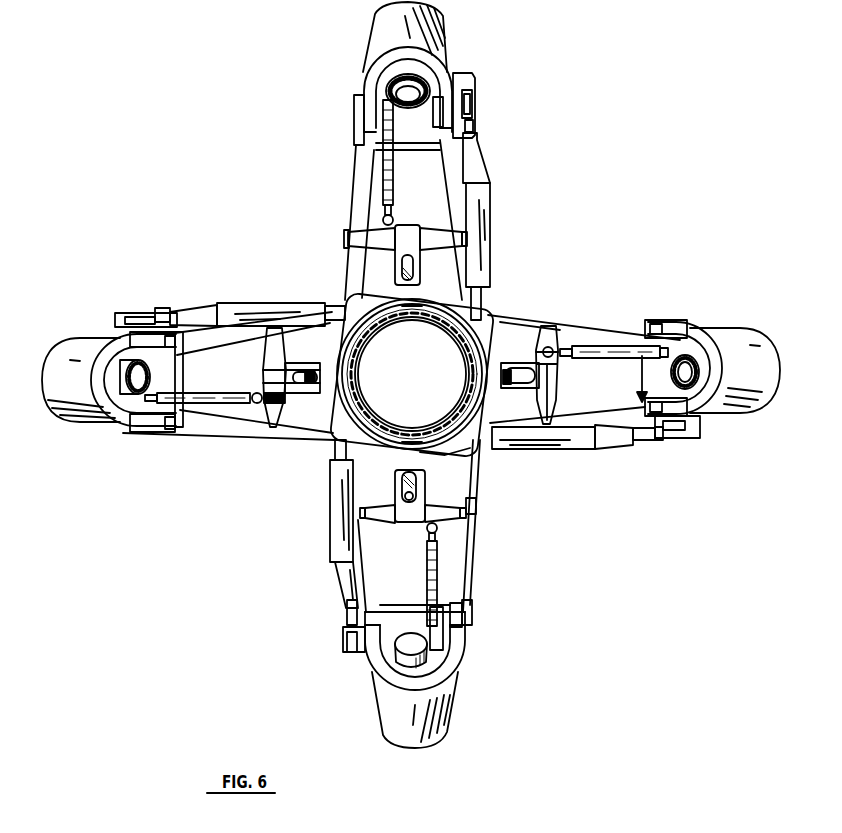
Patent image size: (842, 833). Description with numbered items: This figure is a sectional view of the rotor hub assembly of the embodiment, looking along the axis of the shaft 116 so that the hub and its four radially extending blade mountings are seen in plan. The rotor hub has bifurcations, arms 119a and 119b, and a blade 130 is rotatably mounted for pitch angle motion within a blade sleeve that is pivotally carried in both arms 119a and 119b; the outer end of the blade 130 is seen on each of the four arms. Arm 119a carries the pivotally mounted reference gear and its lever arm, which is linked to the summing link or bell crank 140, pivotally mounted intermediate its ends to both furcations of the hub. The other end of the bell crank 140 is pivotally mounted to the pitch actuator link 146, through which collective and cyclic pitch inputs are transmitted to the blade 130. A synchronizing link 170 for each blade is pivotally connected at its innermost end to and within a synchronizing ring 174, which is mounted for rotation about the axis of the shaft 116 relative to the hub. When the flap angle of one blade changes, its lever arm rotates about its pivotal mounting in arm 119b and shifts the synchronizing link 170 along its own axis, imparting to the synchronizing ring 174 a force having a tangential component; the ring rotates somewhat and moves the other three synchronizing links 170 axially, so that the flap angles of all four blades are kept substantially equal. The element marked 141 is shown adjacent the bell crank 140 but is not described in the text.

The shaft 116 is at (460, 366).
The arm 119a is at (627, 330).
The arm 119b is at (618, 420).
The blade 130 is at (770, 383).
The summing link or bell crank 140 is at (554, 370).
The pivot pin 141 is at (549, 388).
The pitch actuator link 146 is at (506, 368).
The synchronizing link 170 is at (491, 223).
The synchronizing ring 174 is at (436, 452).